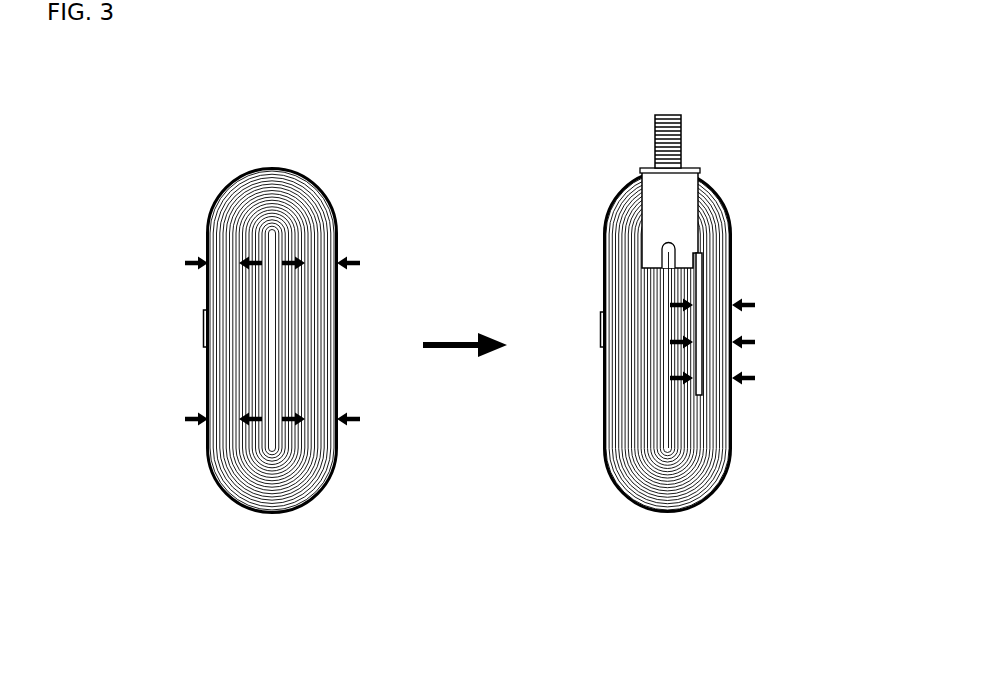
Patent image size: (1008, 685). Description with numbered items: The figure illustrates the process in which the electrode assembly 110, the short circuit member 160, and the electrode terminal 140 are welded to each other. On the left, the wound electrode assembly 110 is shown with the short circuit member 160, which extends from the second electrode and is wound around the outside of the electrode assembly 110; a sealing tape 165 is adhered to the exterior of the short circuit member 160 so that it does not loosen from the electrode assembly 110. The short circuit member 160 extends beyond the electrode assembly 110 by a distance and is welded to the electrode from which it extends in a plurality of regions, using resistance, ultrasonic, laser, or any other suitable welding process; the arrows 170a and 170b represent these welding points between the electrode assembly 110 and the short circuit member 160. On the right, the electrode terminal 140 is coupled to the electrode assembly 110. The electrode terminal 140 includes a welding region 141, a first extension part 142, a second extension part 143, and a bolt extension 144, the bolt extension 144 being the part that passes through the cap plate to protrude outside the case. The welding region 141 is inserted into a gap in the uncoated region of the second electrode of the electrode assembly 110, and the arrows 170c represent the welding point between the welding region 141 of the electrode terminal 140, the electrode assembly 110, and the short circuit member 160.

The electrode assembly 110 is at (226, 487).
The second electrode terminal 140 is at (724, 256).
The welding region 141 is at (704, 279).
The first extension part 142 is at (693, 188).
The second extension part 143 is at (687, 168).
The bolt extension 144 is at (685, 116).
The short circuit member 160 is at (215, 197).
The sealing tape 165 is at (601, 346).
The welding points 170a is at (198, 257).
The welding points 170b is at (188, 415).
The welding point 170c is at (753, 372).